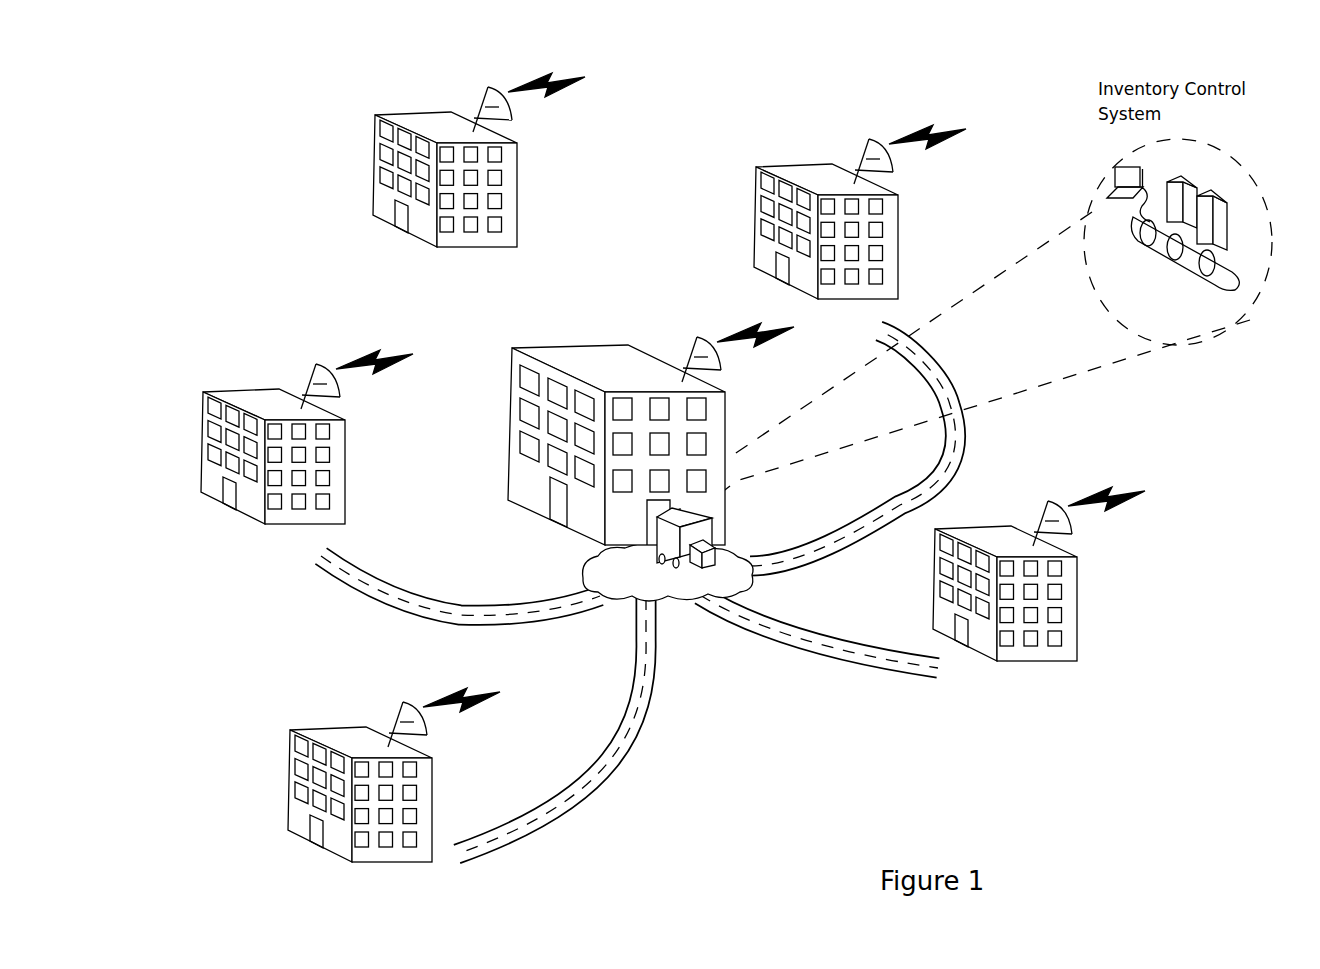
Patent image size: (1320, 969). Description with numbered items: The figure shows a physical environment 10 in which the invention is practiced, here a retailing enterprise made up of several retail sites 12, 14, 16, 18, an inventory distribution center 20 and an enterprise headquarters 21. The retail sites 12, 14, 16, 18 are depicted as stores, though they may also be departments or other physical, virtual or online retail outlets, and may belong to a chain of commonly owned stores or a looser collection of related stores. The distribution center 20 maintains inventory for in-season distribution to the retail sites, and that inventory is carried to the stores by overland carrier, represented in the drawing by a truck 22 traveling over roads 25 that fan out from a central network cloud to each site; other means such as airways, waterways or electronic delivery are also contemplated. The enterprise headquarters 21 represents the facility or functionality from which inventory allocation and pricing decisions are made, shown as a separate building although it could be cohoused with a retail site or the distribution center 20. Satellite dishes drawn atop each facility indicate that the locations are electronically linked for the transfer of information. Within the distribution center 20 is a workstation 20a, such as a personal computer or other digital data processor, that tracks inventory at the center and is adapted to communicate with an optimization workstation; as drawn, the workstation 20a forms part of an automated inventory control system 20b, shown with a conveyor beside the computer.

The physical environment 10 is at (224, 137).
The retail site 12 is at (298, 383).
The retail site 14 is at (380, 720).
The retail site 16 is at (840, 147).
The retail site 18 is at (1023, 500).
The inventory distribution center 20 is at (648, 338).
The workstation 20a is at (1151, 182).
The automated inventory control system 20b is at (1210, 182).
The enterprise headquarters 21 is at (473, 78).
The truck 22 is at (678, 544).
The roads 25 is at (668, 572).